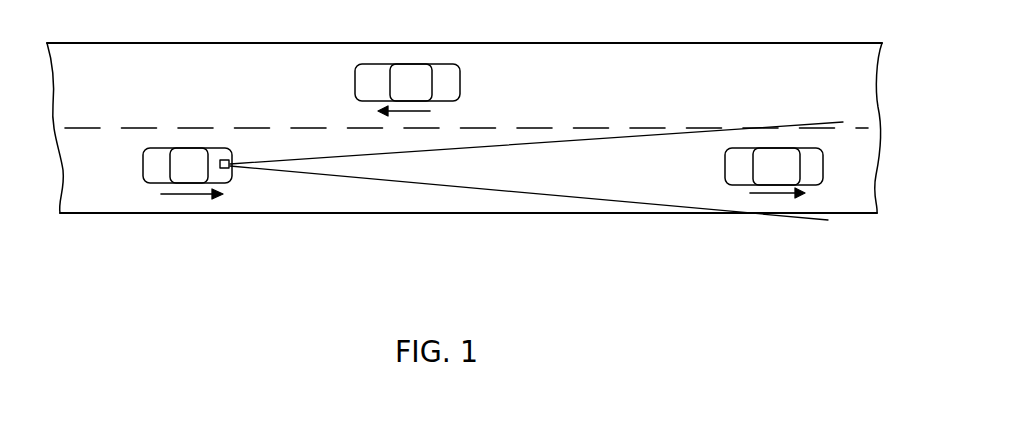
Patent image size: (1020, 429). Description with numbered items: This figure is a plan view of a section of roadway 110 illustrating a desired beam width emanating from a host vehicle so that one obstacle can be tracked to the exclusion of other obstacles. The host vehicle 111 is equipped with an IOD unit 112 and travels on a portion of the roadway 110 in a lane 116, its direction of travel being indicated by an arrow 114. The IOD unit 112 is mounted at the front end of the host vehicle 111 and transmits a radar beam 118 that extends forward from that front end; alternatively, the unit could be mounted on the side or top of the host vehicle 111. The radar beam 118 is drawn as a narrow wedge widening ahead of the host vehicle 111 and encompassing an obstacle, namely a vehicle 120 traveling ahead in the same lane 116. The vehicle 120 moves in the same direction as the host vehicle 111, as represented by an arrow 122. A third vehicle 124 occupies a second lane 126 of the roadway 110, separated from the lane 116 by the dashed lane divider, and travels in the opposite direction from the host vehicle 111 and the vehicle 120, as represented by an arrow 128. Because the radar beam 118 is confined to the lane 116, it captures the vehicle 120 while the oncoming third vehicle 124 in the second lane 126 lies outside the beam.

The roadway 110 is at (317, 197).
The host vehicle 111 is at (152, 163).
The IOD unit 112 is at (231, 175).
The arrow 114 is at (182, 198).
The lane 116 is at (72, 173).
The radar beam 118 is at (775, 127).
The vehicle 120 is at (725, 168).
The arrow 122 is at (768, 195).
The third vehicle 124 is at (455, 79).
The second lane 126 is at (53, 67).
The arrow 128 is at (430, 110).